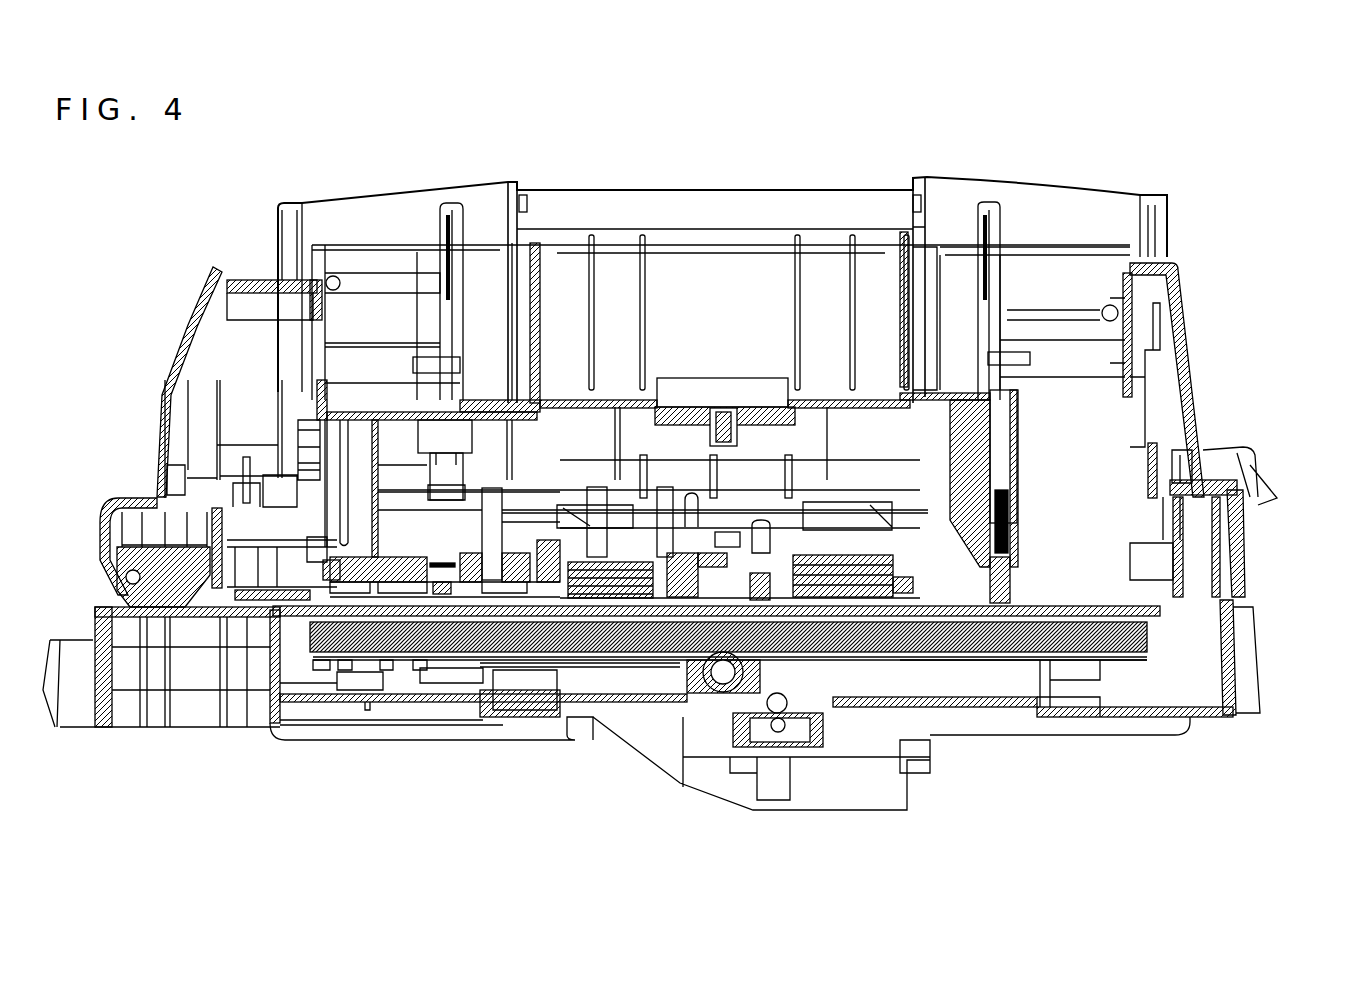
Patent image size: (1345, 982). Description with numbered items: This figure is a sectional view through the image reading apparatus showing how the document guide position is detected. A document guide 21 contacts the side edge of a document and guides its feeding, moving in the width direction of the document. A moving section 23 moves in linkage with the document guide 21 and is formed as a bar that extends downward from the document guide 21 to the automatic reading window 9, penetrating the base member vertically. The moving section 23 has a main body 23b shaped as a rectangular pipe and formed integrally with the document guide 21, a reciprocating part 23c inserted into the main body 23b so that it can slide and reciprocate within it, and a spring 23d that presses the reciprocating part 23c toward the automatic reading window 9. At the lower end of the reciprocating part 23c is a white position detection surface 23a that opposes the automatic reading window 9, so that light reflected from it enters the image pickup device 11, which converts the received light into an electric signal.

The document guide 21 is at (437, 243).
The moving section 23 is at (1033, 442).
The position detection surface 23a is at (1063, 580).
The main body 23b is at (1023, 467).
The reciprocating part 23c is at (1040, 567).
The spring 23d is at (1023, 520).
The automatic reading window 9 is at (1115, 650).
The image pickup device 11 is at (947, 660).